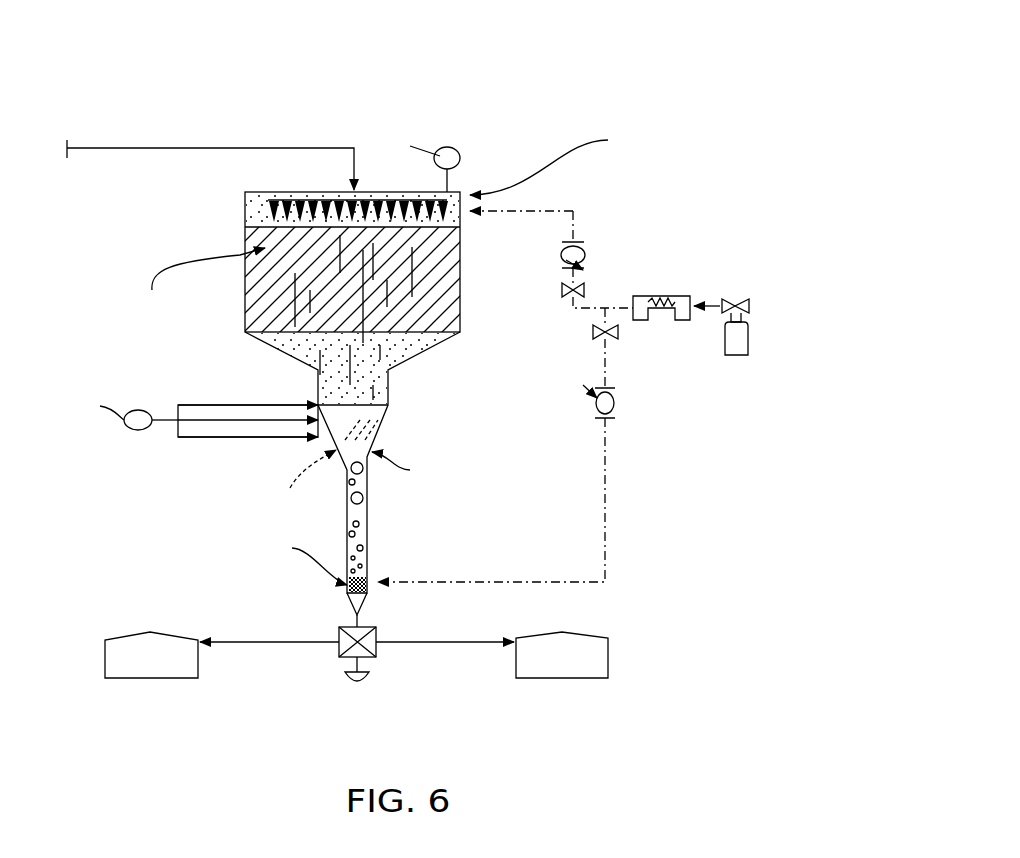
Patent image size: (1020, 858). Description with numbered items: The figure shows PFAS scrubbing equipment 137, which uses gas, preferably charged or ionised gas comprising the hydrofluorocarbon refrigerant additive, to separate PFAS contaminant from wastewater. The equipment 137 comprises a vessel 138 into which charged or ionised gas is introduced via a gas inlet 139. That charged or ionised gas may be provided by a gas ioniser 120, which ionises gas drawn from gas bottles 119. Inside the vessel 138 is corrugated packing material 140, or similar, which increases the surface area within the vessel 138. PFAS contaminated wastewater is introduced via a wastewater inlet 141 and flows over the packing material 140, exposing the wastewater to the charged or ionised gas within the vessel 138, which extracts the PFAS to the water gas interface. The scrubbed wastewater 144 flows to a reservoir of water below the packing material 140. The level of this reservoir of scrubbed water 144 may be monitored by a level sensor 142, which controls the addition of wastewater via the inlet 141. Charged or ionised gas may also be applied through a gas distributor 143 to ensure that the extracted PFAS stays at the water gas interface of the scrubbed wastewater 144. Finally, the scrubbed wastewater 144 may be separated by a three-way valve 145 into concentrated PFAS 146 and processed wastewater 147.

The PFAS scrubbing equipment 137 is at (580, 98).
The vessel 138 is at (462, 282).
The gas inlet 139 is at (568, 226).
The corrugated packing material 140 is at (262, 333).
The wastewater inlet 141 is at (255, 147).
The level sensor 142 is at (228, 420).
The gas distributor 143 is at (348, 593).
The scrubbed wastewater 144 is at (366, 546).
The three-way valve 145 is at (378, 636).
The concentrated PFAS 146 is at (132, 634).
The processed wastewater 147 is at (592, 634).
The gas ioniser 120 is at (662, 297).
The gas bottles 119 is at (750, 337).